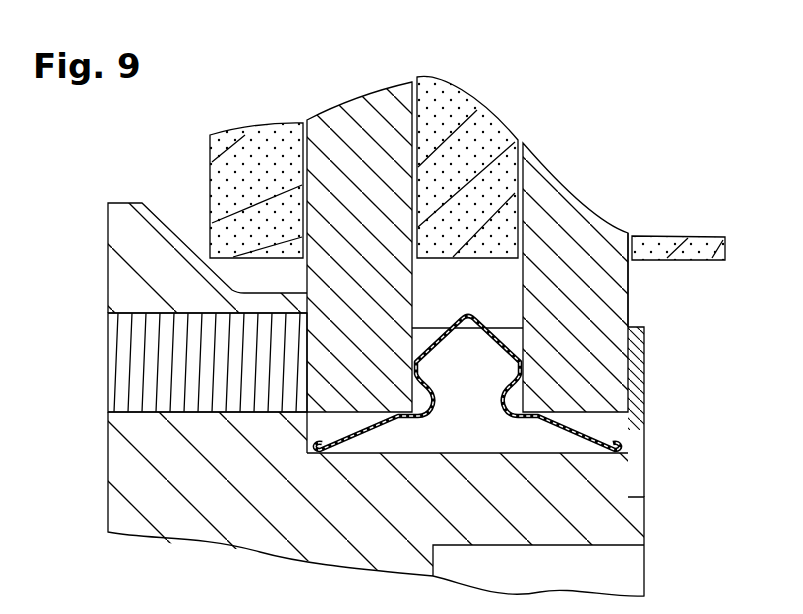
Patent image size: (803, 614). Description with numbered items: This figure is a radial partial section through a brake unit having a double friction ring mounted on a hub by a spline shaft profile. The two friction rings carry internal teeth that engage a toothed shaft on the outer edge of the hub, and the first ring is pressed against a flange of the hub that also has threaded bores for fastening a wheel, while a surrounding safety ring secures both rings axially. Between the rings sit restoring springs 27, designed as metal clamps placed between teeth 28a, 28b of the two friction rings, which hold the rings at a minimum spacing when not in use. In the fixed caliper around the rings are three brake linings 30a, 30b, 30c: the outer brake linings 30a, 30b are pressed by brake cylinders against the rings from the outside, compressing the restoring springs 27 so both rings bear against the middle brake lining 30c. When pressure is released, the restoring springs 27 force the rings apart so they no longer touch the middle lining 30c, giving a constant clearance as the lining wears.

The restoring springs 27 is at (605, 433).
The tooth 28a is at (343, 380).
The tooth 28b is at (628, 325).
The brake lining 30a is at (253, 163).
The brake lining 30b is at (667, 240).
The brake lining 30c is at (482, 143).